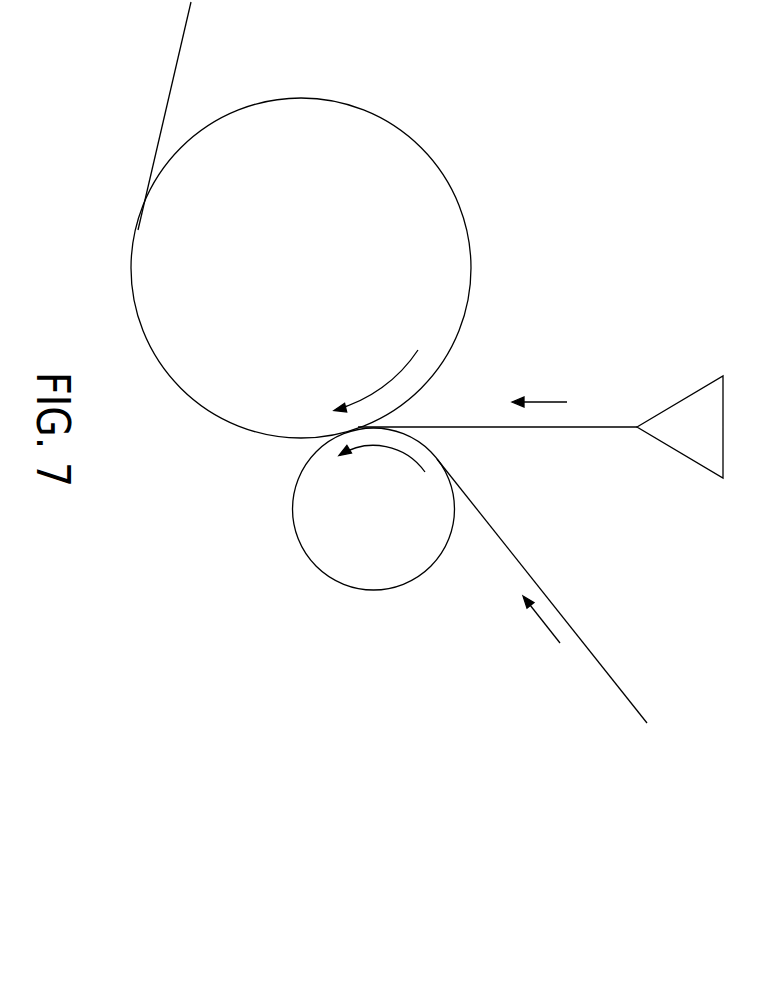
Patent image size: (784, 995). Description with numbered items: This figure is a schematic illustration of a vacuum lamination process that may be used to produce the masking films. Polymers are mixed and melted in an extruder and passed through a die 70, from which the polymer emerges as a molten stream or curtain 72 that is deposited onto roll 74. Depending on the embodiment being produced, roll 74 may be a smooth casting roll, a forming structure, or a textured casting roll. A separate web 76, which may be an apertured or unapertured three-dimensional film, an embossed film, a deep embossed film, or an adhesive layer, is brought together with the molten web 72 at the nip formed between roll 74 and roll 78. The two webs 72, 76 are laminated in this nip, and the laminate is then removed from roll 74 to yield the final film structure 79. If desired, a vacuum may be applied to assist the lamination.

The die 70 is at (680, 427).
The molten stream or curtain 72 is at (553, 429).
The roll 74 is at (301, 268).
The web 76 is at (597, 663).
The roll 78 is at (374, 509).
The final film structure 79 is at (164, 107).